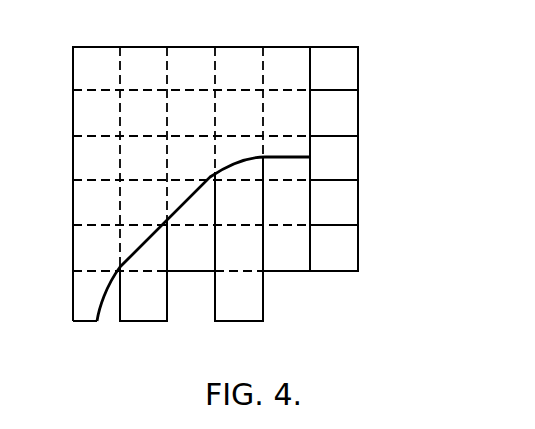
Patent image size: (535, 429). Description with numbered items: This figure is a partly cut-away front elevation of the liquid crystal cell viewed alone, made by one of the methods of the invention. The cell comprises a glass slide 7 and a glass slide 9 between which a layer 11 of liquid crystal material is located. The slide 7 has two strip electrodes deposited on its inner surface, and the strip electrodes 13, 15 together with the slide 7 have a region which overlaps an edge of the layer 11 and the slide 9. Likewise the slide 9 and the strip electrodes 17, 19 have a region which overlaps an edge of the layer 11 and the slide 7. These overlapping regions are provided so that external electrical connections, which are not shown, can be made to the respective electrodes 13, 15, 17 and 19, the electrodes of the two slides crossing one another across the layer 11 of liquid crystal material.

The glass slide 7 is at (87, 312).
The glass slide 9 is at (360, 68).
The layer of liquid crystal material 11 is at (283, 263).
The strip electrode 13 is at (145, 310).
The strip electrode 15 is at (237, 310).
The strip electrode 17 is at (340, 117).
The strip electrode 19 is at (350, 203).